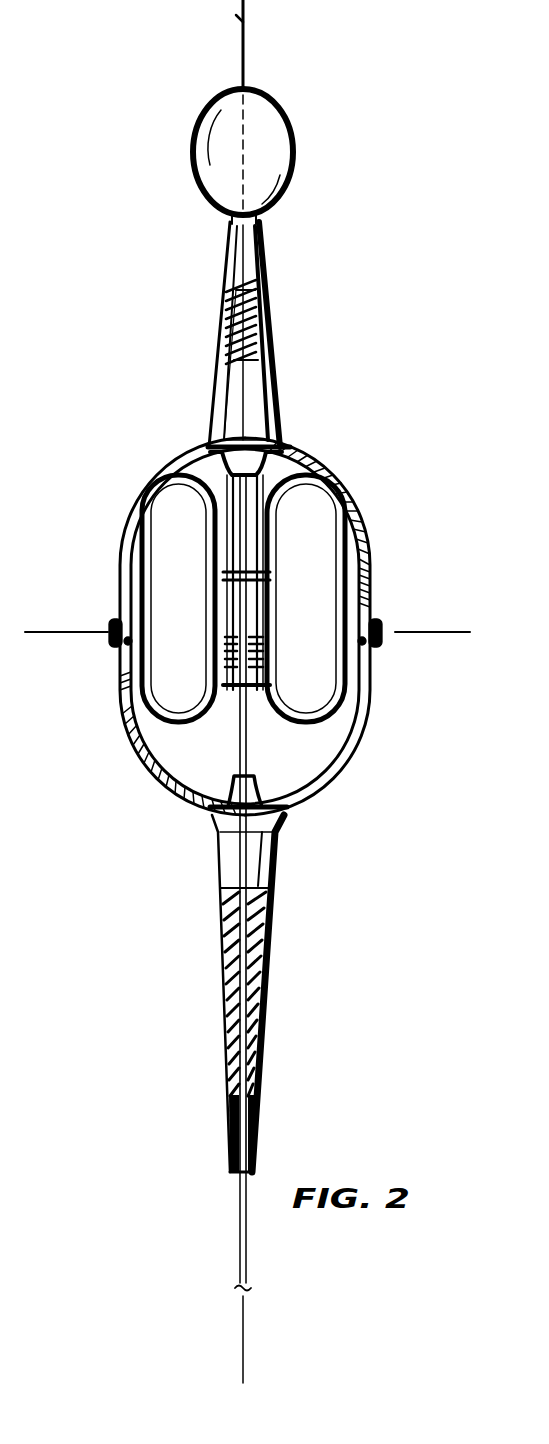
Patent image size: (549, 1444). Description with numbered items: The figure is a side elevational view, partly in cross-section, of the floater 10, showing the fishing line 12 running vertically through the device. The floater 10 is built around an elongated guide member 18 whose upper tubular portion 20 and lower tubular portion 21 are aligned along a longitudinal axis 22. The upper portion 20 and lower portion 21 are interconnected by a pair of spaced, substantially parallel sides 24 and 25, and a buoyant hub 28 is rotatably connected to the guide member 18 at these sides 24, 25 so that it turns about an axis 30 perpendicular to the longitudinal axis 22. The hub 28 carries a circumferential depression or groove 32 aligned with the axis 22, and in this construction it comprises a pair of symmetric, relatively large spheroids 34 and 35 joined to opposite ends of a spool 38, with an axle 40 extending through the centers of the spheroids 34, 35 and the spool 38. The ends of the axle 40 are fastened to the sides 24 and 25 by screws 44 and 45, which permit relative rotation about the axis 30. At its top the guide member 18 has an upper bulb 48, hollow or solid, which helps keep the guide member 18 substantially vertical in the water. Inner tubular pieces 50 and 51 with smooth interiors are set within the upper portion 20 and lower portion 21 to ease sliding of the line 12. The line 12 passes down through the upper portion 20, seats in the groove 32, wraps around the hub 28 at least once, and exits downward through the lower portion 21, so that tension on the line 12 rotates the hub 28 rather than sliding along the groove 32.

The floater 10 is at (415, 107).
The fishing line 12 is at (248, 42).
The guide member 18 is at (265, 263).
The upper tubular portion 20 is at (228, 268).
The lower tubular portion 21 is at (225, 1058).
The longitudinal axis 22 is at (242, 1348).
The side 24 is at (120, 571).
The side 25 is at (372, 581).
The buoyant hub 28 is at (157, 493).
The axis 30 is at (456, 633).
The depression 32 is at (258, 547).
The spheroid 34 is at (185, 576).
The spheroid 35 is at (310, 598).
The spool 38 is at (225, 632).
The axle 40 is at (128, 646).
The screw 44 is at (112, 625).
The screw 45 is at (383, 625).
The upper bulb 48 is at (206, 132).
The inner tubular piece 50 is at (225, 342).
The inner tubular piece 51 is at (222, 955).